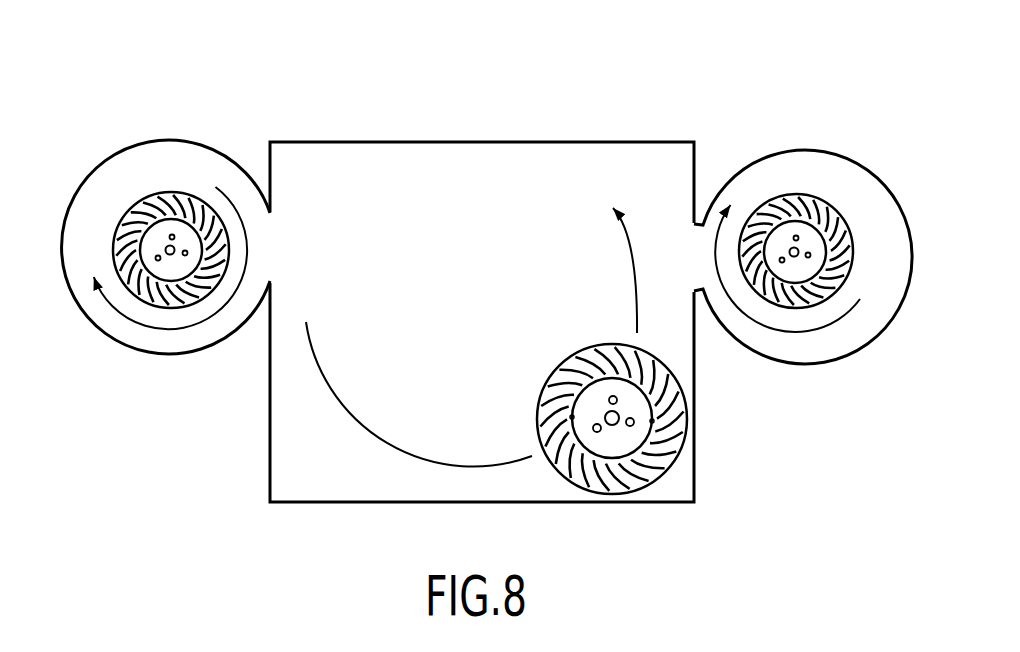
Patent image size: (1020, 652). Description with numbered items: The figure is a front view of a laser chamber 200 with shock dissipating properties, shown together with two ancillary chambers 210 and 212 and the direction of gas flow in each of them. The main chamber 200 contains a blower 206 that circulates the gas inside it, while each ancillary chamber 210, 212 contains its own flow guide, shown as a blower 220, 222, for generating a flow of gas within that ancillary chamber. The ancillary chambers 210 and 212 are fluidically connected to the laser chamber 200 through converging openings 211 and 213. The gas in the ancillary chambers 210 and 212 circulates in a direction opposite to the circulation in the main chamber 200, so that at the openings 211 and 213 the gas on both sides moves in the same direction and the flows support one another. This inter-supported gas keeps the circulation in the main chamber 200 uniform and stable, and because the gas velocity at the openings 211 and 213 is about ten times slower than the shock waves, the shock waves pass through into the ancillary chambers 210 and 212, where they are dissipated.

The laser chamber 200 is at (638, 107).
The blower 206 is at (545, 385).
The ancillary chamber 210 is at (185, 142).
The converging opening 211 is at (268, 248).
The ancillary chamber 212 is at (780, 156).
The converging opening 213 is at (697, 262).
The blower 220 is at (122, 218).
The blower 222 is at (838, 221).